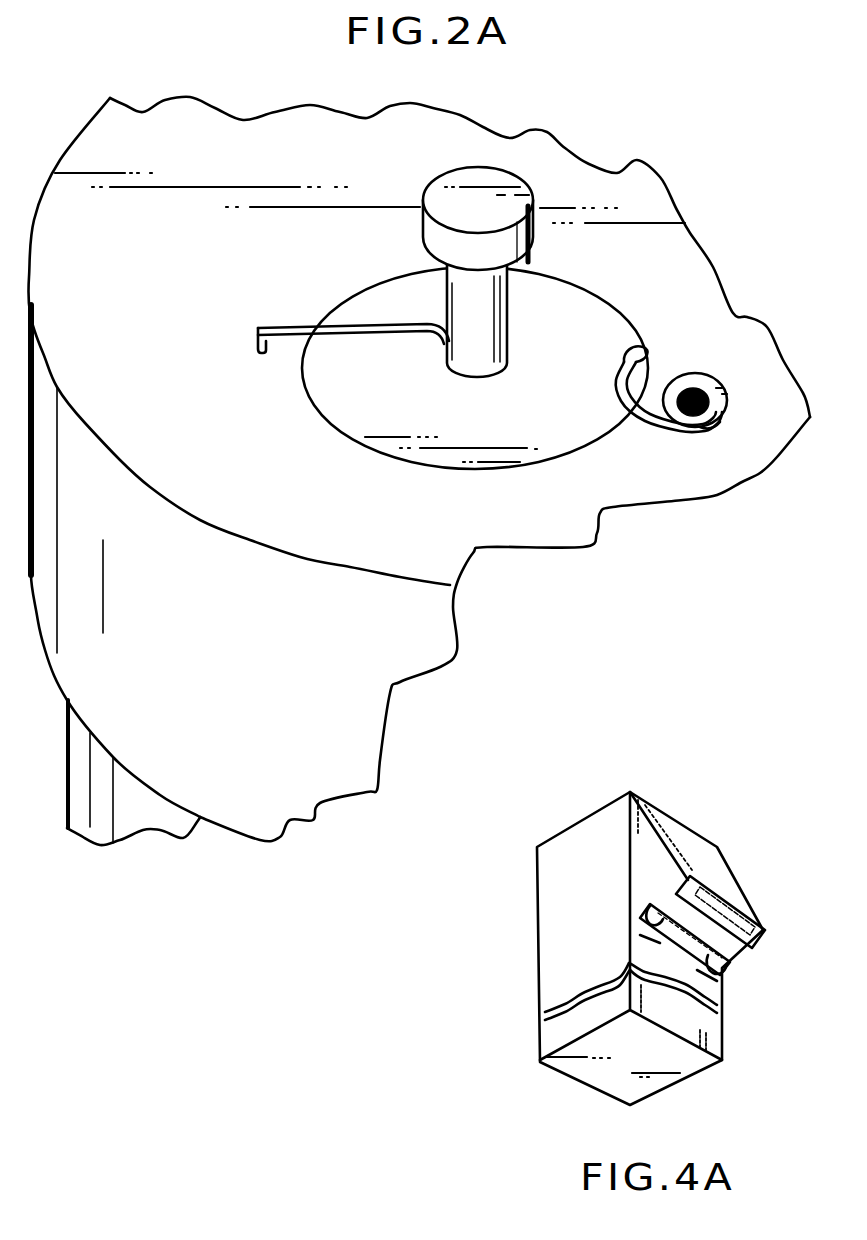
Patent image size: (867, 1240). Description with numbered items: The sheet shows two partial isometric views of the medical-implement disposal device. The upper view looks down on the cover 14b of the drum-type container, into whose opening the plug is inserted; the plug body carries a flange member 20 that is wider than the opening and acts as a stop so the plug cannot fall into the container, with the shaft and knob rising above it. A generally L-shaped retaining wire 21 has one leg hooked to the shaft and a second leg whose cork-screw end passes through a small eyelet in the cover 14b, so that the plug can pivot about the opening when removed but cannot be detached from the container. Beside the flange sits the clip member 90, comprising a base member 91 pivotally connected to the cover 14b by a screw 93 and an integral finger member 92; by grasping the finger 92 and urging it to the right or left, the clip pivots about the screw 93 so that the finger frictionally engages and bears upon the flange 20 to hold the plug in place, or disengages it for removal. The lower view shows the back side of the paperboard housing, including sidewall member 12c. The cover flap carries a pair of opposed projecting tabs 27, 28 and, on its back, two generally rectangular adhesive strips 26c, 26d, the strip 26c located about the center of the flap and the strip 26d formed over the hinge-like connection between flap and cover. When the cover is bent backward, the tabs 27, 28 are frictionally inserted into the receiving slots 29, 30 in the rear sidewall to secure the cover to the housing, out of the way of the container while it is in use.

In FIG. 2A, the cover 14b is at (74, 148).
In FIG. 2A, the flange member 20 is at (592, 311).
In FIG. 2A, the retaining wire 21 is at (290, 301).
In FIG. 2A, the finger member 92 is at (643, 364).
In FIG. 2A, the clip member 90 is at (713, 384).
In FIG. 2A, the screw 93 is at (708, 401).
In FIG. 2A, the base member 91 is at (711, 421).
In FIG. 4A, the sidewall member 12c is at (607, 1044).
In FIG. 4A, the adhesive strip 26d is at (720, 897).
In FIG. 4A, the adhesive strip 26c is at (760, 938).
In FIG. 4A, the projecting tab 27 is at (650, 915).
In FIG. 4A, the receiving slot 29 is at (642, 936).
In FIG. 4A, the projecting tab 28 is at (724, 972).
In FIG. 4A, the receiving slot 30 is at (719, 968).